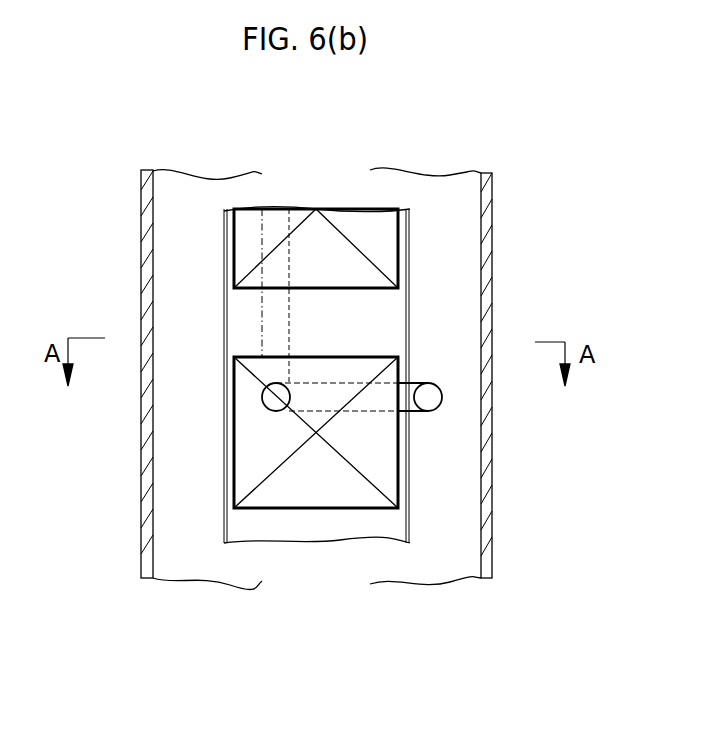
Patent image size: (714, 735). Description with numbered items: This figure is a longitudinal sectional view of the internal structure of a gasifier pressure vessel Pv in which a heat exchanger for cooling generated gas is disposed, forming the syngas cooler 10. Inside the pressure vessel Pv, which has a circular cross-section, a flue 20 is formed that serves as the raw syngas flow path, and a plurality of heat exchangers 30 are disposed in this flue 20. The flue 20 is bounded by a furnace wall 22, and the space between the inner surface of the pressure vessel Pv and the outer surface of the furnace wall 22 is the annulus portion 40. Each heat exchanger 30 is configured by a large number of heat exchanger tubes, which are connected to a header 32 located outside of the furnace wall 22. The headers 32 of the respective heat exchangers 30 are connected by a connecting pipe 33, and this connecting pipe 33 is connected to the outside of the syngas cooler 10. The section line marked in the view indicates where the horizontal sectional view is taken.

The syngas cooler 10 is at (472, 340).
The flue 20 is at (203, 466).
The furnace wall 22 is at (225, 391).
The heat exchanger 30 is at (375, 248).
The header 32 is at (432, 397).
The connecting pipe 33 is at (350, 382).
The annulus portion 40 is at (150, 253).
The pressure vessel Pv is at (486, 206).